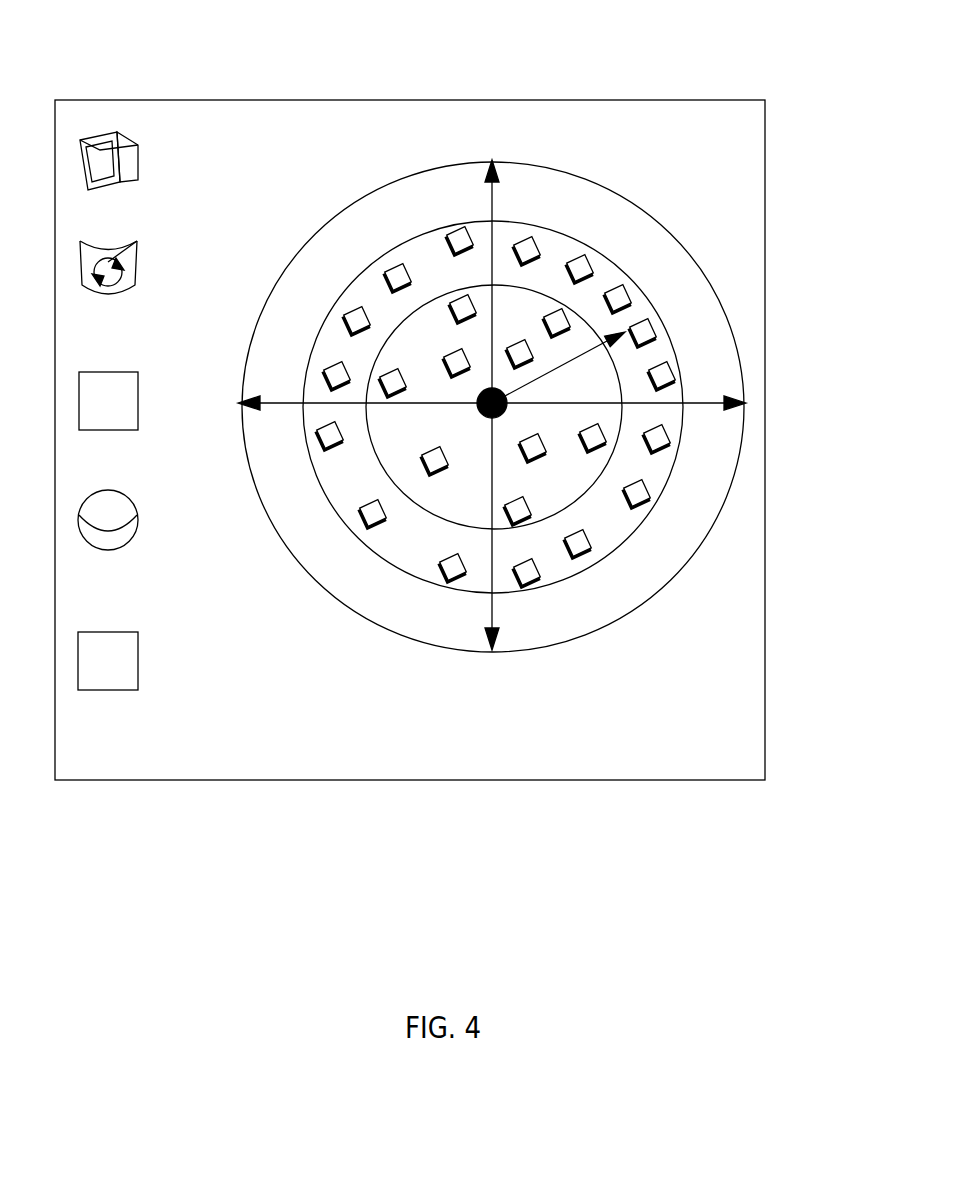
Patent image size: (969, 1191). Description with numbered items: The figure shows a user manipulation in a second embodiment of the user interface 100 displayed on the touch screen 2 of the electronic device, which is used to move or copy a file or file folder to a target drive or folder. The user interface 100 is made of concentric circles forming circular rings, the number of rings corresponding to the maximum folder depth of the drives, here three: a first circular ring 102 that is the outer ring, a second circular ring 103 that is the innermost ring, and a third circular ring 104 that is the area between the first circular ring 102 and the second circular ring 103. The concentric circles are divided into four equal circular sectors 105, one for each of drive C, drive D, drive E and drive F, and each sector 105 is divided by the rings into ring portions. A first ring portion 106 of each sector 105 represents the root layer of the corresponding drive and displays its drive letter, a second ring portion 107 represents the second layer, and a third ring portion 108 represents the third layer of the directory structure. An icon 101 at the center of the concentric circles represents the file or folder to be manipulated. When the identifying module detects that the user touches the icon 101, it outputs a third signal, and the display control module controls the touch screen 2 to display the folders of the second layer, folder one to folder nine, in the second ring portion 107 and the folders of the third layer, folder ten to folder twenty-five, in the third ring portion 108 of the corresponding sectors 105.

The touch screen 2 is at (418, 100).
The user interface 100 is at (500, 359).
The icon 101 is at (478, 398).
The first circular ring 102 is at (745, 345).
The second circular ring 103 is at (533, 285).
The third circular ring 104 is at (677, 460).
The circular sector 105 is at (612, 207).
The first ring portion 106 is at (422, 615).
The second ring portion 107 is at (410, 440).
The third ring portion 108 is at (422, 545).